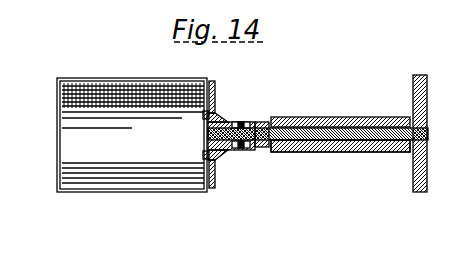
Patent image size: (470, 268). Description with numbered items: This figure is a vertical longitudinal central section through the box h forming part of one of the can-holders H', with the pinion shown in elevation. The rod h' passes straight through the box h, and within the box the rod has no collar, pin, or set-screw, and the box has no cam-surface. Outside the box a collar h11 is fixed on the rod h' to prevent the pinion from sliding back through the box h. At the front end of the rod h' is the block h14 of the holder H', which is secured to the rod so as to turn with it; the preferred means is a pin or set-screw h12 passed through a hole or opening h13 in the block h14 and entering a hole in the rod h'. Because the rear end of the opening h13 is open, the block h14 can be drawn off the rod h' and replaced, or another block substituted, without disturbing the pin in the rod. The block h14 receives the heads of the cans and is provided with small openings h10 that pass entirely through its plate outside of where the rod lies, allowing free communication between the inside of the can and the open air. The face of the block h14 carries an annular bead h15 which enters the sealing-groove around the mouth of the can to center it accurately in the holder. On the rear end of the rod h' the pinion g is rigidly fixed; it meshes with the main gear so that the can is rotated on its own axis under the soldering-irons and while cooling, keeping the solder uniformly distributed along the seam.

The box h is at (318, 123).
The rod h' is at (221, 187).
The small openings h10 is at (214, 97).
The collar h11 is at (263, 122).
The pin or set-screw h12 is at (239, 122).
The hole or opening h13 is at (243, 148).
The block h14 is at (220, 121).
The annular bead h15 is at (206, 113).
The pinion g is at (428, 102).
The can-holders H' is at (340, 165).